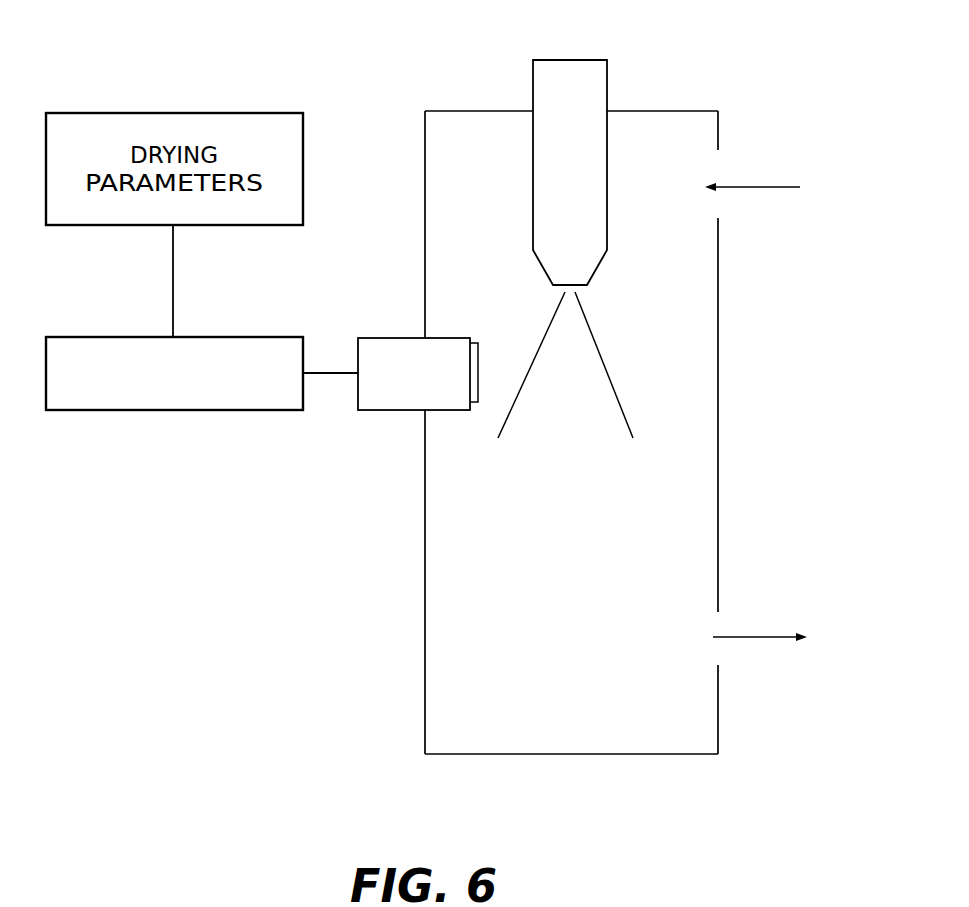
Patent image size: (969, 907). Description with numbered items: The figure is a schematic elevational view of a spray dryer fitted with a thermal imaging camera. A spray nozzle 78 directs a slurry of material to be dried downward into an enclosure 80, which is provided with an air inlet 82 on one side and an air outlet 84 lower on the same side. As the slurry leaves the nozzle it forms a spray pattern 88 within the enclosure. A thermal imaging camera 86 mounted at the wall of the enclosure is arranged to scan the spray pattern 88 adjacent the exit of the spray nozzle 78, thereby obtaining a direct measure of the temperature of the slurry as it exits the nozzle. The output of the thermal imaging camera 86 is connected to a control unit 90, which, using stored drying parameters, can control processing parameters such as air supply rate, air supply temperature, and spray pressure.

The spray nozzle 78 is at (607, 77).
The enclosure 80 is at (425, 522).
The air inlet 82 is at (718, 167).
The air outlet 84 is at (717, 622).
The thermal imaging camera 86 is at (390, 338).
The spray pattern 88 is at (603, 358).
The control unit 90 is at (172, 411).